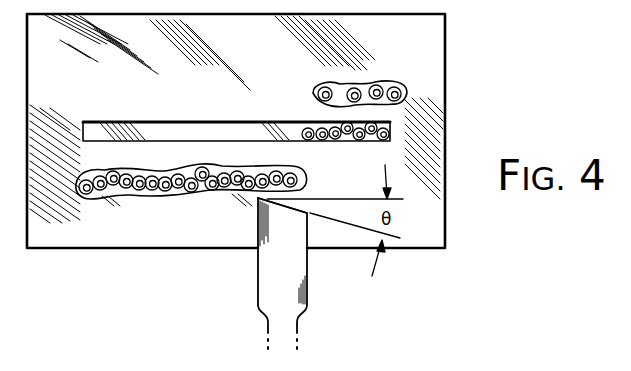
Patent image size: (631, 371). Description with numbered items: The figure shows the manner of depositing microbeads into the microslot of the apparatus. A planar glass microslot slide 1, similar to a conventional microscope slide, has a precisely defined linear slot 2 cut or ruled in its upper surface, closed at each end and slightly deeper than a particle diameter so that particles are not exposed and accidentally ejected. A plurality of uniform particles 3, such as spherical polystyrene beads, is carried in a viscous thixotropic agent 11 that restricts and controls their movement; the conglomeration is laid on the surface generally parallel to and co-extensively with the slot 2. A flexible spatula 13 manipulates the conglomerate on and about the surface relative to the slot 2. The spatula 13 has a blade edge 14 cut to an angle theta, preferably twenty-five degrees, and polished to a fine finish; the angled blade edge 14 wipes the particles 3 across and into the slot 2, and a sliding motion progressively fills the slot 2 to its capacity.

The microslot slide 1 is at (462, 78).
The slot 2 is at (171, 121).
The particle 3 is at (390, 87).
The viscous agent 11 is at (312, 91).
The spatula 13 is at (258, 300).
The blade edge 14 is at (297, 205).